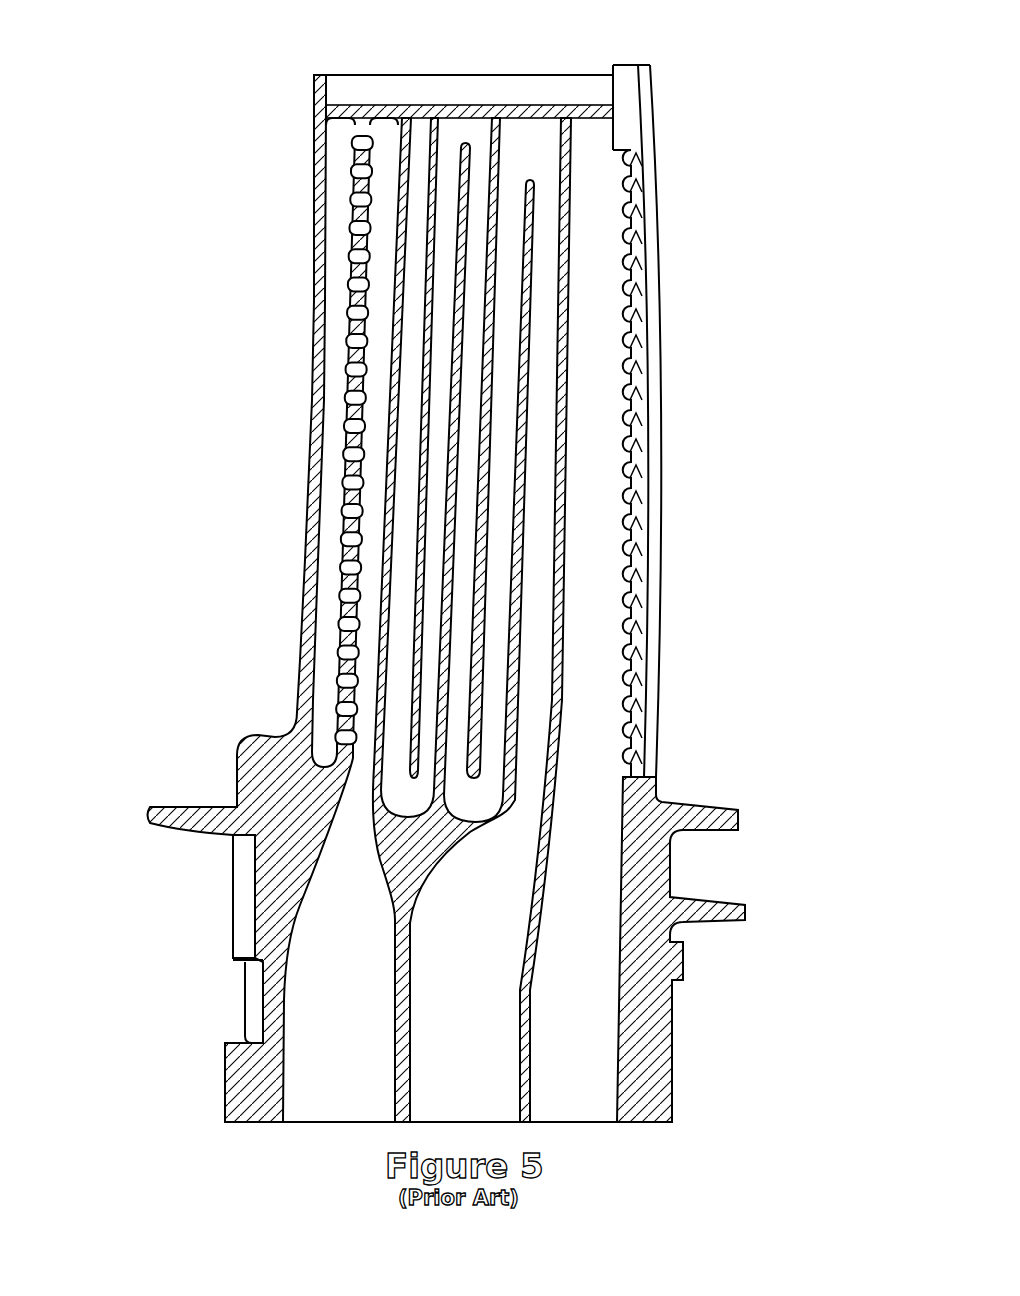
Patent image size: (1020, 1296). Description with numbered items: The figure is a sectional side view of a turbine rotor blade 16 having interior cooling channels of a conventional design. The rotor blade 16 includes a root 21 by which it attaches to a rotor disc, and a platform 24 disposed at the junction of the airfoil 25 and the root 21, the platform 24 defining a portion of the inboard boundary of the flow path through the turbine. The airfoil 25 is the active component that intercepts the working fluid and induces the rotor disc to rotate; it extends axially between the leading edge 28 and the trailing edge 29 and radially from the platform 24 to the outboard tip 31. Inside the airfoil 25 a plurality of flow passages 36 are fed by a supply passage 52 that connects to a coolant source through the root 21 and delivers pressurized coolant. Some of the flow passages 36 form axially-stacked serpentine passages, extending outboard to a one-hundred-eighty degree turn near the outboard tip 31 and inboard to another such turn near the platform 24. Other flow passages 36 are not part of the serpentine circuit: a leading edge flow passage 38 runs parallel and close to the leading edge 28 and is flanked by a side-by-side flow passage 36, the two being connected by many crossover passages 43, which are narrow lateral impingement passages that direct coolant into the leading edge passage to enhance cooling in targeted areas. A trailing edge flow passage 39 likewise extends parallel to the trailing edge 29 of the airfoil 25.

The turbine rotor blade 16 is at (135, 180).
The root 21 is at (178, 1008).
The platform 24 is at (694, 803).
The airfoil 25 is at (190, 358).
The leading edge 28 is at (312, 505).
The trailing edge 29 is at (658, 335).
The outboard tip 31 is at (483, 75).
The flow passages 36 is at (340, 246).
The leading edge flow passage 38 is at (328, 577).
The trailing edge flow passage 39 is at (600, 449).
The crossover passages 43 is at (358, 170).
The supply passage 52 is at (357, 1041).